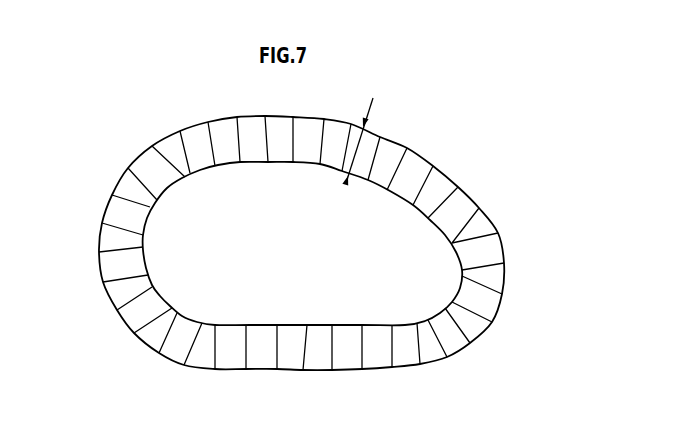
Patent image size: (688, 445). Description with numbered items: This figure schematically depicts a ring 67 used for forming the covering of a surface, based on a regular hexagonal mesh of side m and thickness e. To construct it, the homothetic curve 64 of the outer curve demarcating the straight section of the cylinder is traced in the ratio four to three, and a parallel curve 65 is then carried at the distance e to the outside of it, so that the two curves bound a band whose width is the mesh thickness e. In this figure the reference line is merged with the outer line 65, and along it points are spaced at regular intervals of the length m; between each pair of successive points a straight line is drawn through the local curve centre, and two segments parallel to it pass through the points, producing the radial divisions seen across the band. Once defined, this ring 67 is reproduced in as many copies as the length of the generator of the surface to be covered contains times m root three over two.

The homothetic curve 64 is at (400, 210).
The parallel curve 65 is at (444, 164).
The ring 67 is at (515, 330).
The thickness e is at (362, 142).